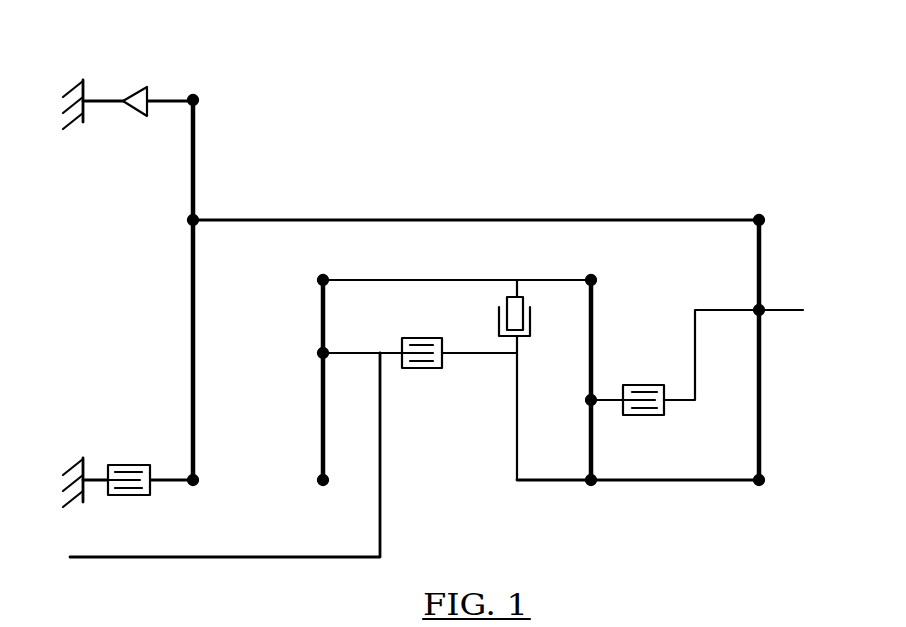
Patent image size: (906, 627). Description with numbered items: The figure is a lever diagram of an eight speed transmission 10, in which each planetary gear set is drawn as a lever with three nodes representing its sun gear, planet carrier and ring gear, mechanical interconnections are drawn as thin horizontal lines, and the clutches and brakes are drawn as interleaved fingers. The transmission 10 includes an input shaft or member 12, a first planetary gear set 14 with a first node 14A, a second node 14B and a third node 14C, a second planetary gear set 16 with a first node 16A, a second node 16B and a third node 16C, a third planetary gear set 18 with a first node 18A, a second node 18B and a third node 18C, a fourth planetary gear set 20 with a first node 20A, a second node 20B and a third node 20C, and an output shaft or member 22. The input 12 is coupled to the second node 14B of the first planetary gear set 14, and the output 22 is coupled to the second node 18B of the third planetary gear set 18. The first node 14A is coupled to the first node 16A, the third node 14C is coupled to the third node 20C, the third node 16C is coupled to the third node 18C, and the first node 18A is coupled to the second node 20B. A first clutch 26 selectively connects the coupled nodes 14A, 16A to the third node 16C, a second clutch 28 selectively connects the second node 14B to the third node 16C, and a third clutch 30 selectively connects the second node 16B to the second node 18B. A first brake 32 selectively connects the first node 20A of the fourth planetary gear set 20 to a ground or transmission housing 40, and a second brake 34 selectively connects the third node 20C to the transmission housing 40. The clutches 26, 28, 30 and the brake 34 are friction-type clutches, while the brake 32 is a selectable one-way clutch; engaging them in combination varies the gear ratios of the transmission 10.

The eight speed transmission 10 is at (640, 124).
The input shaft or member 12 is at (264, 560).
The first planetary gear set 14 is at (332, 515).
The first node of the first planetary gear set 14A is at (319, 279).
The second node of the first planetary gear set 14B is at (319, 352).
The third node of the first planetary gear set 14C is at (322, 488).
The second planetary gear set 16 is at (598, 508).
The first node of the second planetary gear set 16A is at (590, 277).
The second node of the second planetary gear set 16B is at (586, 399).
The third node of the second planetary gear set 16C is at (590, 486).
The third planetary gear set 18 is at (770, 508).
The first node of the third planetary gear set 18A is at (759, 217).
The second node of the third planetary gear set 18B is at (755, 309).
The third node of the third planetary gear set 18C is at (759, 486).
The fourth planetary gear set 20 is at (192, 508).
The first node of the fourth planetary gear set 20A is at (200, 100).
The second node of the fourth planetary gear set 20B is at (190, 220).
The third node of the fourth planetary gear set 20C is at (197, 488).
The output shaft or member 22 is at (788, 313).
The first clutch 26 is at (498, 318).
The second clutch 28 is at (423, 338).
The third clutch 30 is at (647, 384).
The first brake 32 is at (140, 86).
The second brake 34 is at (137, 463).
The transmission housing 40 is at (74, 124).